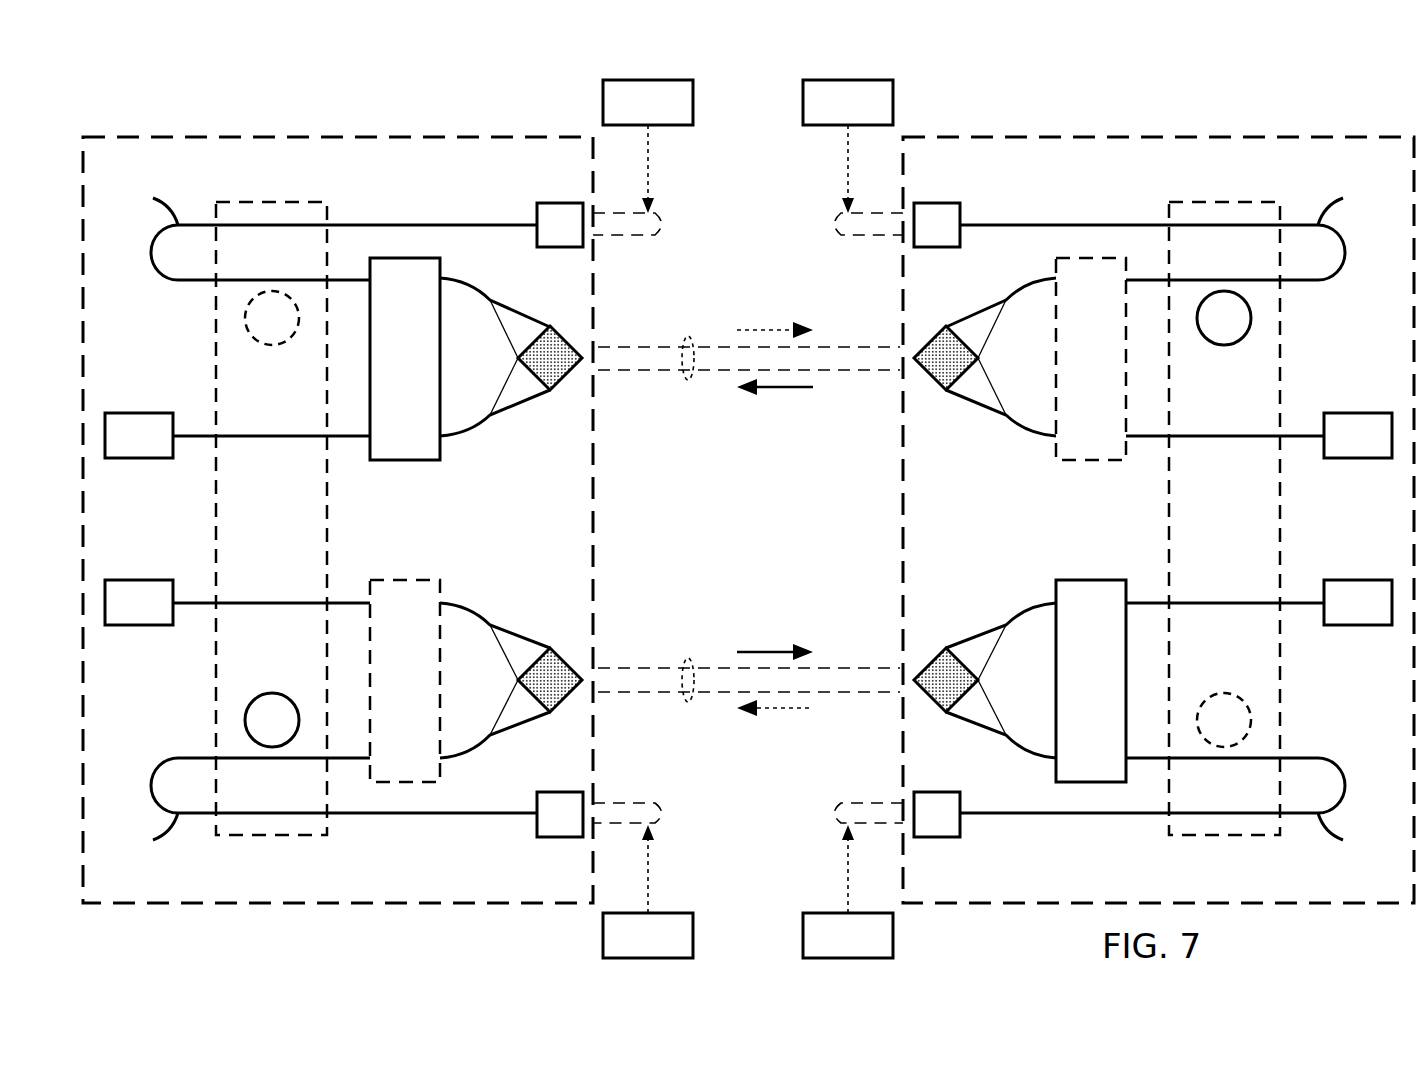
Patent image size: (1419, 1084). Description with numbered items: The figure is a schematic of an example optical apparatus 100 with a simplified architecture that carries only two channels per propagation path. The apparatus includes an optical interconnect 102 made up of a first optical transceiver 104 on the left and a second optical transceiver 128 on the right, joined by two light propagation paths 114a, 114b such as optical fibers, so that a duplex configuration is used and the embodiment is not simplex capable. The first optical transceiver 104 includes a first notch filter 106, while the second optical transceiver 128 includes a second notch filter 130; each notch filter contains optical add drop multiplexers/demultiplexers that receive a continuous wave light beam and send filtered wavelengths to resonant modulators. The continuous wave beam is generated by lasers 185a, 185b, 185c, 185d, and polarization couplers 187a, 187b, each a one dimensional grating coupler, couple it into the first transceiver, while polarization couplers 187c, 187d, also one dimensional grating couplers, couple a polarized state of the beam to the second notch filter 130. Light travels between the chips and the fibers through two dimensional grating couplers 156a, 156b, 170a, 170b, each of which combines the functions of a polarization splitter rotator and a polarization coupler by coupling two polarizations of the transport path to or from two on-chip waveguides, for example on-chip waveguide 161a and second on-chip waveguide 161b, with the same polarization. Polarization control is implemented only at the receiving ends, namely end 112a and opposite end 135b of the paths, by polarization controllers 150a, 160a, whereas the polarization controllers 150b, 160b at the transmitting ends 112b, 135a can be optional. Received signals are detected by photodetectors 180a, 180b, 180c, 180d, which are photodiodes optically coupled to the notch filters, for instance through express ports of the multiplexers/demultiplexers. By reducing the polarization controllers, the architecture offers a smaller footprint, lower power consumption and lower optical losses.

The optical apparatus 100 is at (112, 90).
The optical interconnect 102 is at (1325, 108).
The first optical transceiver 104 is at (254, 132).
The first notch filter 106 is at (290, 532).
The end of light propagation path 112a is at (600, 345).
The end of light propagation path 112b is at (600, 667).
The light propagation path 114a is at (688, 382).
The light propagation path 114b is at (688, 704).
The second optical transceiver 128 is at (1248, 130).
The second notch filter 130 is at (1246, 531).
The opposite end of light propagation path 135a is at (900, 345).
The opposite end of light propagation path 135b is at (900, 667).
The polarization controller 150a is at (403, 462).
The polarization controller 150b is at (405, 578).
The 2D grating coupler 156a is at (566, 330).
The 2D grating coupler 156b is at (562, 714).
The polarization controller 160a is at (1090, 578).
The polarization controller 160b is at (1092, 462).
The on-chip waveguide 161a is at (427, 222).
The second on-chip waveguide 161b is at (438, 816).
The 2D grating coupler 170a is at (932, 330).
The 2D grating coupler 170b is at (932, 712).
The photodetector 180a is at (140, 412).
The photodetector 180b is at (140, 626).
The photodetector 180c is at (1358, 412).
The photodetector 180d is at (1356, 626).
The laser 185a is at (603, 100).
The laser 185b is at (603, 940).
The laser 185c is at (893, 100).
The laser 185d is at (893, 938).
The polarization coupler 187a is at (560, 202).
The polarization coupler 187b is at (560, 838).
The polarization coupler 187c is at (937, 838).
The polarization coupler 187d is at (937, 202).